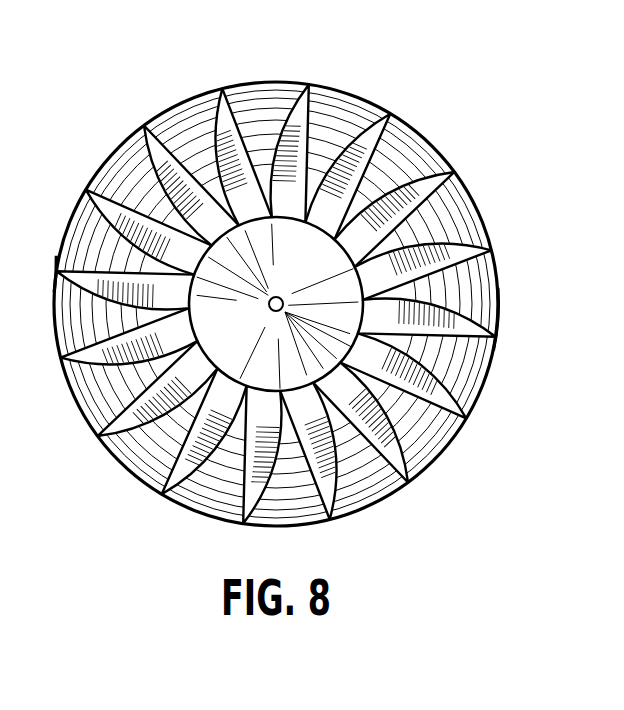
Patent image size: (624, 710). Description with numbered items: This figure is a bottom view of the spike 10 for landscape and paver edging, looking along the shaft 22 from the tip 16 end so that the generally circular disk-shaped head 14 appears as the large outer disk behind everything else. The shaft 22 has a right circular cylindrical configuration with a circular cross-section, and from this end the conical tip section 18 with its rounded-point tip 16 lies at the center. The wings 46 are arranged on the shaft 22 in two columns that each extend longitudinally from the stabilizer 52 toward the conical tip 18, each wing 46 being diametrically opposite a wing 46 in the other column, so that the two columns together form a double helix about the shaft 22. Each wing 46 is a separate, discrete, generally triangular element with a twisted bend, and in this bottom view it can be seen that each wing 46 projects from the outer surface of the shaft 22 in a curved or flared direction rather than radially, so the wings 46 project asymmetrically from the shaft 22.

The spike 10 is at (273, 269).
The head 14 is at (403, 122).
The tip 16 is at (283, 297).
The conical tip section 18 is at (248, 340).
The shaft 22 is at (122, 457).
The wings 46 is at (122, 150).
The stabilizer 52 is at (62, 254).